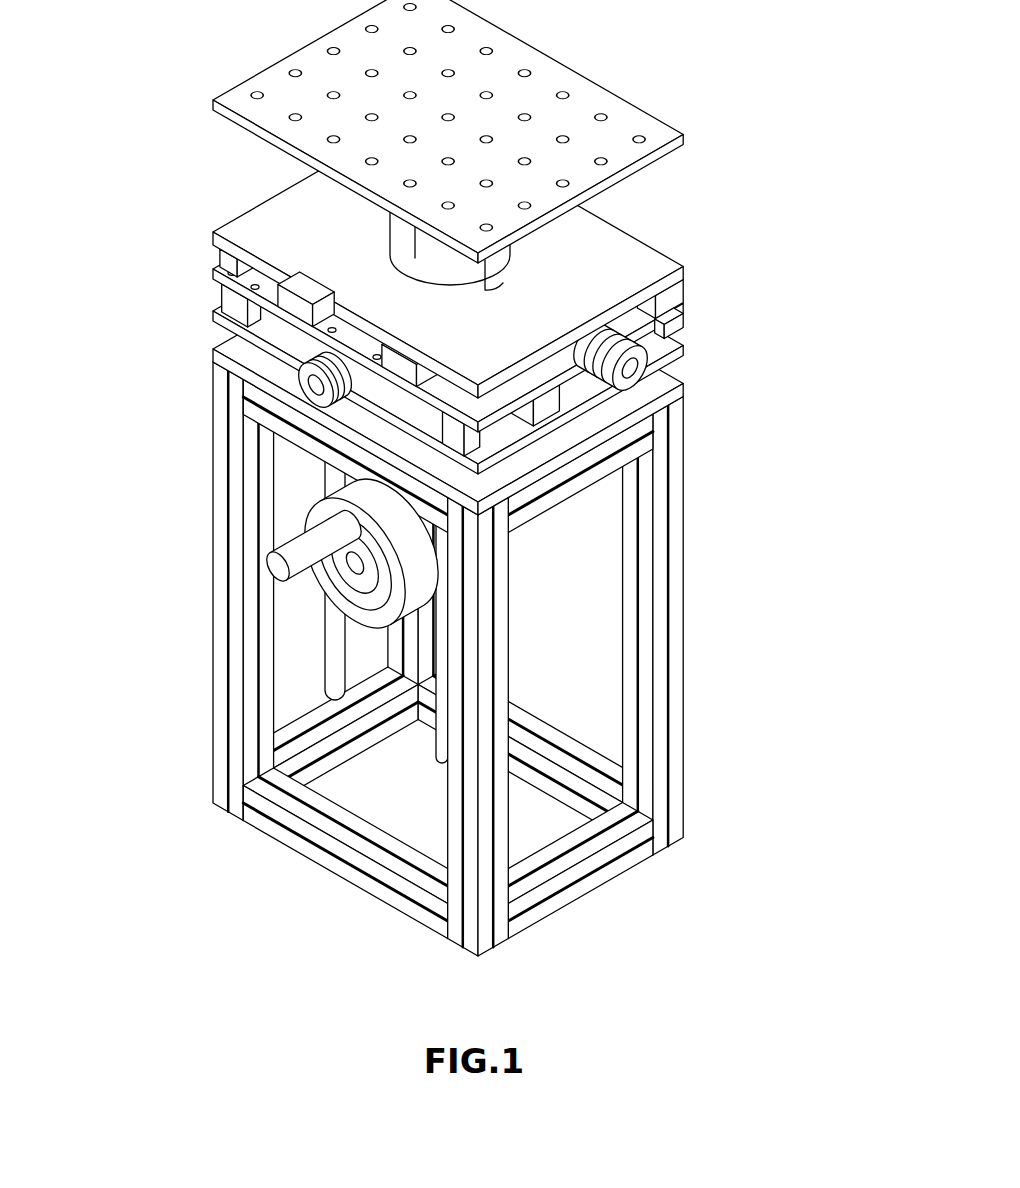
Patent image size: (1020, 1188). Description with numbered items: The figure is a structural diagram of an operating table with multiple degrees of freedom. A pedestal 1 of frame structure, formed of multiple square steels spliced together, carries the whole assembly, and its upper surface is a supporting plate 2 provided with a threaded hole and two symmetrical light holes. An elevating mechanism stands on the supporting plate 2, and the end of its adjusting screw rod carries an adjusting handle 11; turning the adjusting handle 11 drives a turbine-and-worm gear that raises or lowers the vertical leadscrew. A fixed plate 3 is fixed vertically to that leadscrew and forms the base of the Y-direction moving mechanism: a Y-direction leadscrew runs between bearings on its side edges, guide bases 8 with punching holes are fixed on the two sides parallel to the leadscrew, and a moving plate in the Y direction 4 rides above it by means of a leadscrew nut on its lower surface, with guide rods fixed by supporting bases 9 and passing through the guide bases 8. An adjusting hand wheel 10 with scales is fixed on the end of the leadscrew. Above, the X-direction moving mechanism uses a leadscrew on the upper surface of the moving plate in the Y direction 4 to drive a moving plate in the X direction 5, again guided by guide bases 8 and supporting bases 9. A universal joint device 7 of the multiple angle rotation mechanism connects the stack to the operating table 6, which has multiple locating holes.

The pedestal 1 is at (668, 545).
The supporting plate 2 is at (653, 390).
The fixed plate 3 is at (680, 343).
The moving plate in the Y direction 4 is at (673, 300).
The moving plate in the X direction 5 is at (647, 268).
The operating table 6 is at (661, 133).
The universal joint device 7 is at (433, 253).
The guide base 8 is at (297, 297).
The supporting base 9 is at (213, 312).
The adjusting hand wheel 10 is at (303, 381).
The adjusting handle 11 is at (350, 560).